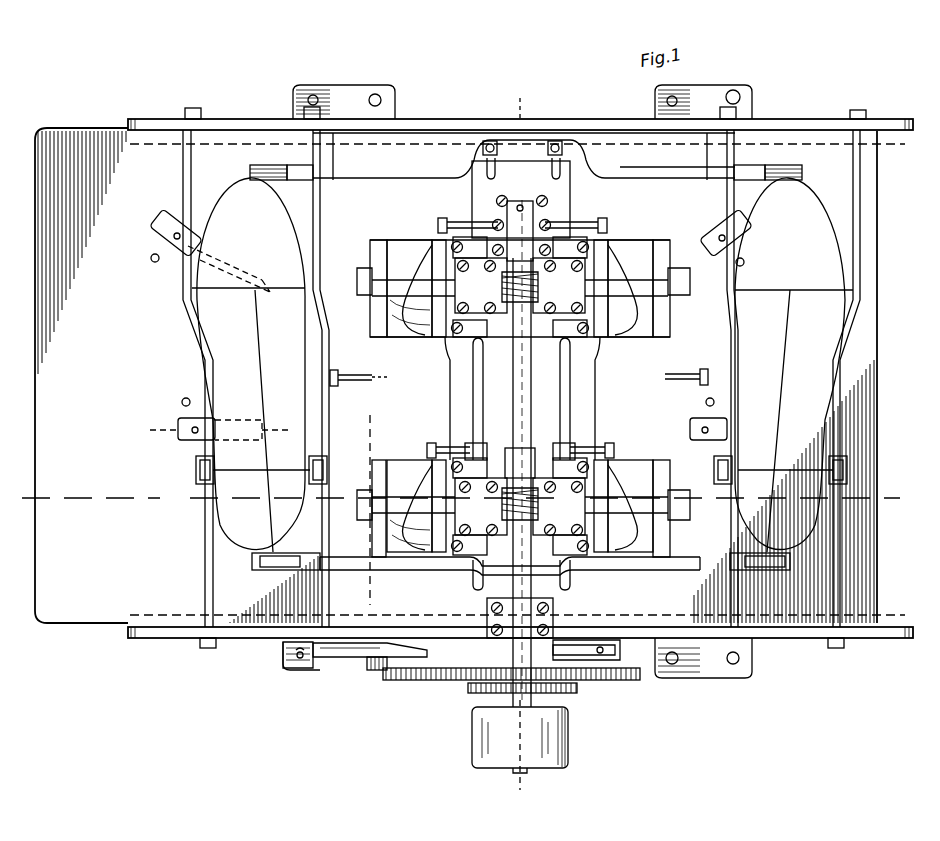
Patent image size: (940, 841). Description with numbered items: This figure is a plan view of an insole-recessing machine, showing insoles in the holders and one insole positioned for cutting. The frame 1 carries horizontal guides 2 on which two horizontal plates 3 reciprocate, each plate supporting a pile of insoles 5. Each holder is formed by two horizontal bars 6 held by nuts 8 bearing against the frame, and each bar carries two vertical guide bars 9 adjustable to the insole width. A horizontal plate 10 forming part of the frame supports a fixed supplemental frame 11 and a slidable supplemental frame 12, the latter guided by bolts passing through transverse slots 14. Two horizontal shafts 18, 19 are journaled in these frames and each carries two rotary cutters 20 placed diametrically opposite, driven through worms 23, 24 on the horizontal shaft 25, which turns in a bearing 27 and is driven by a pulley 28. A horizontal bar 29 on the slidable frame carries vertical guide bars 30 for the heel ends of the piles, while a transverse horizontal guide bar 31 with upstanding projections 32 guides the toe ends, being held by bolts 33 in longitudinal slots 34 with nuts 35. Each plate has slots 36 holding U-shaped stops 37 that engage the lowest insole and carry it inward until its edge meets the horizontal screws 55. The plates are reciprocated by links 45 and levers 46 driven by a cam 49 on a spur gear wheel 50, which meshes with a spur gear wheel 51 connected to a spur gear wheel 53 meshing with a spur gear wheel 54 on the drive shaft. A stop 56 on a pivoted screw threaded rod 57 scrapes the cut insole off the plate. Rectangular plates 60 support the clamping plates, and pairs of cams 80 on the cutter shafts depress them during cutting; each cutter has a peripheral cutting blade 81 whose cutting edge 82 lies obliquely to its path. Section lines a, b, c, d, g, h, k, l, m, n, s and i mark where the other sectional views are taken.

The frame 1 is at (172, 640).
The horizontal guides 2 is at (524, 156).
The horizontal plates 3 is at (36, 452).
The insoles 5 is at (225, 343).
The horizontal bars 6 is at (205, 563).
The nuts 8 is at (208, 110).
The vertical guide bars 9 is at (183, 302).
The horizontal plate 10 is at (473, 190).
The supplemental frame 11 is at (538, 338).
The supplemental frame 12 is at (540, 455).
The transverse slots 14 is at (473, 401).
The horizontal shaft 18 is at (682, 296).
The horizontal shaft 19 is at (690, 510).
The rotary cutters 20 is at (662, 339).
The worm 23 is at (572, 296).
The worm 24 is at (572, 513).
The horizontal shaft 25 is at (513, 380).
The bearing 27 is at (488, 610).
The pulley 28 is at (570, 737).
The horizontal bar 29 is at (640, 571).
The vertical guide bars 30 is at (262, 568).
The transverse horizontal guide bar 31 is at (650, 170).
The upstanding projections 32 is at (268, 181).
The bolts 33 is at (498, 156).
The longitudinal slots 34 is at (486, 168).
The nuts 35 is at (547, 149).
The slots 36 is at (166, 220).
The U-shaped stops 37 is at (167, 250).
The links 45 is at (308, 668).
The levers 46 is at (360, 658).
The cam 49 is at (380, 672).
The spur gear wheel 50 is at (420, 682).
The spur gear wheel 51 is at (494, 667).
The spur gear wheel 53 is at (470, 694).
The spur gear wheel 54 is at (520, 702).
The horizontal screws 55 is at (442, 218).
The stop 56 is at (336, 379).
The screw threaded rod 57 is at (368, 380).
The rectangular plates 60 is at (403, 338).
The cams 80 is at (372, 297).
The peripheral cutting blade 81 is at (402, 244).
The cutting edge 82 is at (414, 292).
The section line a is at (452, 499).
The section line b is at (921, 488).
The section line c is at (212, 430).
The section line d is at (245, 344).
The section line g is at (330, 377).
The section line h is at (386, 370).
The section line k is at (517, 97).
The section line l is at (516, 753).
The section line m is at (370, 458).
The section line n is at (365, 564).
The section line s is at (436, 337).
The section line i is at (462, 328).